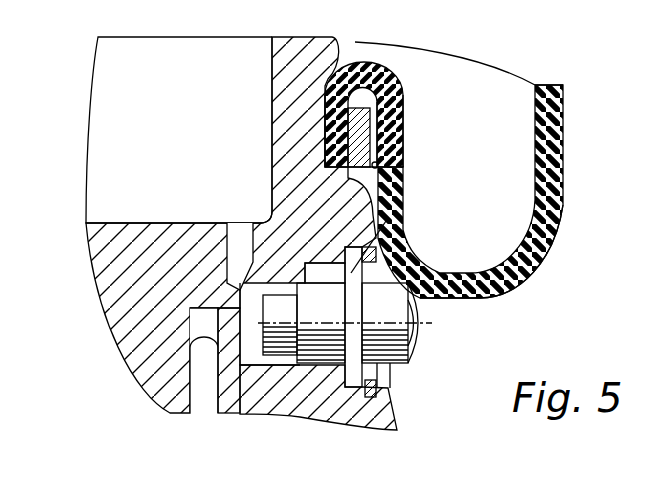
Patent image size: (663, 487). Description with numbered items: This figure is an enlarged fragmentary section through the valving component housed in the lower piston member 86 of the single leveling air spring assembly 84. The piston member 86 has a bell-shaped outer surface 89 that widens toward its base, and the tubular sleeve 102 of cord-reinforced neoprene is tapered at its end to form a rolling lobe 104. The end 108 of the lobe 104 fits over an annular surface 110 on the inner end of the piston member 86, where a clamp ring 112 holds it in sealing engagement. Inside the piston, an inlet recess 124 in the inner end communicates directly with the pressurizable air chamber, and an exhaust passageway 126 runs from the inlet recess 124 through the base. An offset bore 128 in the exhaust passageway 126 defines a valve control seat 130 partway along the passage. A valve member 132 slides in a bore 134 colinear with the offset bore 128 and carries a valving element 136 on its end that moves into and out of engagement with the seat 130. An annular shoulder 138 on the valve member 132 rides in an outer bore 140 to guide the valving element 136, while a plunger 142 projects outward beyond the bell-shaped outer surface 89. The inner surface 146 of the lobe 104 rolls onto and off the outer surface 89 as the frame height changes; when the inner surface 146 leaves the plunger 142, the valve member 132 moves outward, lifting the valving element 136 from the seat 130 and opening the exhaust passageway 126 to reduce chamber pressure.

The air spring assembly 84 is at (568, 163).
The piston member 86 is at (115, 267).
The bell-shaped outer surface 89 is at (393, 390).
The tubular sleeve 102 is at (553, 104).
The rolling lobe 104 is at (560, 243).
The end 108 is at (340, 128).
The annular surface 110 is at (340, 78).
The clamp ring 112 is at (400, 112).
The inlet recess 124 is at (146, 225).
The exhaust passageway 126 is at (192, 372).
The offset bore 128 is at (210, 308).
The valve control seat 130 is at (247, 283).
The valve member 132 is at (320, 350).
The bore 134 is at (338, 262).
The valving element 136 is at (280, 327).
The annular shoulder 138 is at (400, 232).
The outer bore 140 is at (348, 380).
The plunger 142 is at (412, 325).
The inner surface 146 is at (390, 158).